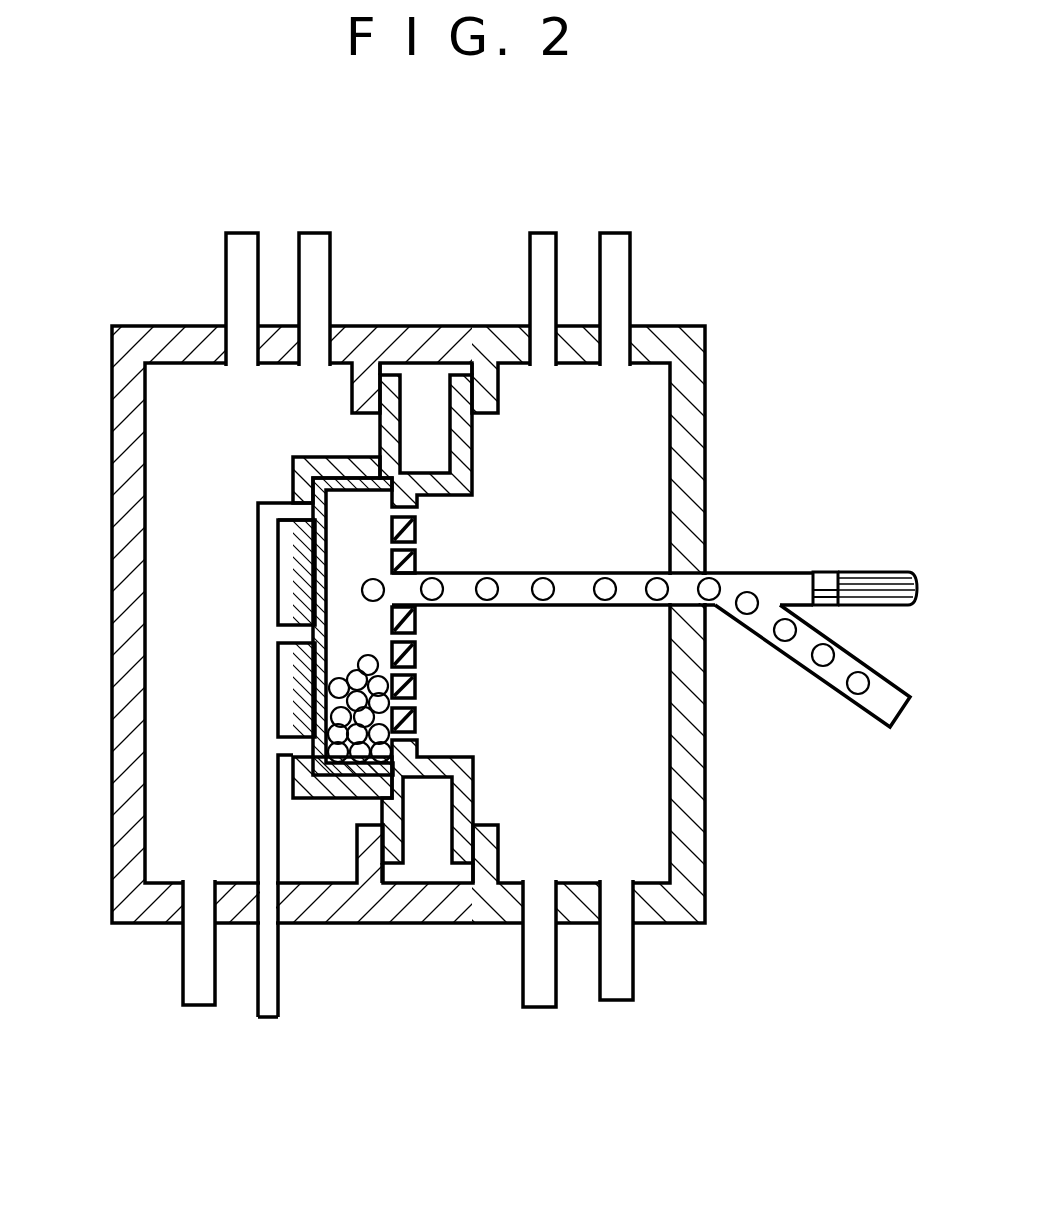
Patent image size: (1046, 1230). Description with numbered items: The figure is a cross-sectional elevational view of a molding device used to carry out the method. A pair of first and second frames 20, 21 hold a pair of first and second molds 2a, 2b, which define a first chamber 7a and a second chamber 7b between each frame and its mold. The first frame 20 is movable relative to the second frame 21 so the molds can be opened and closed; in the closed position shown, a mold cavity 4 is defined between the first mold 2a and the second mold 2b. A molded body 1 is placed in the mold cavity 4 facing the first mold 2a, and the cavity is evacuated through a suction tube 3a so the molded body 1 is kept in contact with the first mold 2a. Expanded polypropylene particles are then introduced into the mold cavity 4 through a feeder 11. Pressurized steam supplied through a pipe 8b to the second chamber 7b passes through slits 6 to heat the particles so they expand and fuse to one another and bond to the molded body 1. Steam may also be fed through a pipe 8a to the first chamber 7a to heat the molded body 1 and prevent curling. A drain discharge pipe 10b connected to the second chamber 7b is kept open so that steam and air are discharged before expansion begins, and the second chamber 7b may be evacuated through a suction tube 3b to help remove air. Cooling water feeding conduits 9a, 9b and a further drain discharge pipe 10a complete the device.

The molded body 1 is at (313, 582).
The first mold 2a is at (293, 462).
The second mold 2b is at (472, 447).
The suction tube 3a is at (266, 1018).
The suction tube 3b is at (620, 1003).
The mold cavity 4 is at (360, 627).
The slits 6 is at (416, 548).
The first chamber 7a is at (160, 500).
The second chamber 7b is at (630, 786).
The pipe 8a is at (241, 233).
The pipe 8b is at (544, 233).
The cooling water feeding conduit 9a is at (315, 233).
The cooling water feeding conduit 9b is at (617, 233).
The drain discharge pipe 10a is at (206, 1008).
The drain discharge pipe 10b is at (546, 1008).
The feeder 11 is at (775, 572).
The first frame 20 is at (125, 815).
The second frame 21 is at (690, 853).